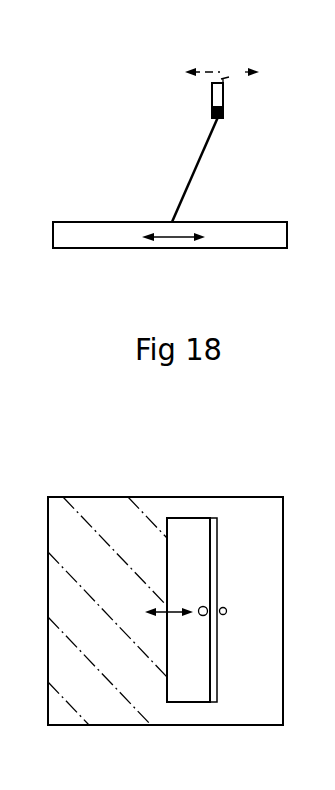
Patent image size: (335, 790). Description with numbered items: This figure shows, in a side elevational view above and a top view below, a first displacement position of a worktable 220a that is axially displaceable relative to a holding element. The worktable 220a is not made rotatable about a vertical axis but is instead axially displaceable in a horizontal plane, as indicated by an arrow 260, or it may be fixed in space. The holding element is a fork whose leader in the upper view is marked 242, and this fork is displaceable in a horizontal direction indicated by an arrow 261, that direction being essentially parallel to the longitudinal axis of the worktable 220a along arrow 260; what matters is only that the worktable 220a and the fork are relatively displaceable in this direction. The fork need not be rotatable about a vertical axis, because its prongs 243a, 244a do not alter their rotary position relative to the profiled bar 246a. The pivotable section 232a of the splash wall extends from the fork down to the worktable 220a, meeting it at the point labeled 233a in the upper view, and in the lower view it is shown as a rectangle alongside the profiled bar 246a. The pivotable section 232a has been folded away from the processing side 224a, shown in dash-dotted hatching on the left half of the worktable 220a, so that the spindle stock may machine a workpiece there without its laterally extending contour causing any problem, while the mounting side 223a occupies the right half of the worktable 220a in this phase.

The worktable 220a is at (260, 238).
The processing side 224a is at (118, 213).
The mounting side 223a is at (253, 221).
The contact point 233a is at (170, 221).
The pivotable section 232a is at (200, 165).
The prong 244a is at (224, 92).
The prong 243a is at (212, 86).
The profiled bar 246a is at (222, 113).
The arrow 261 is at (226, 72).
The drive element 242 is at (223, 79).
The arrow 260 is at (170, 238).